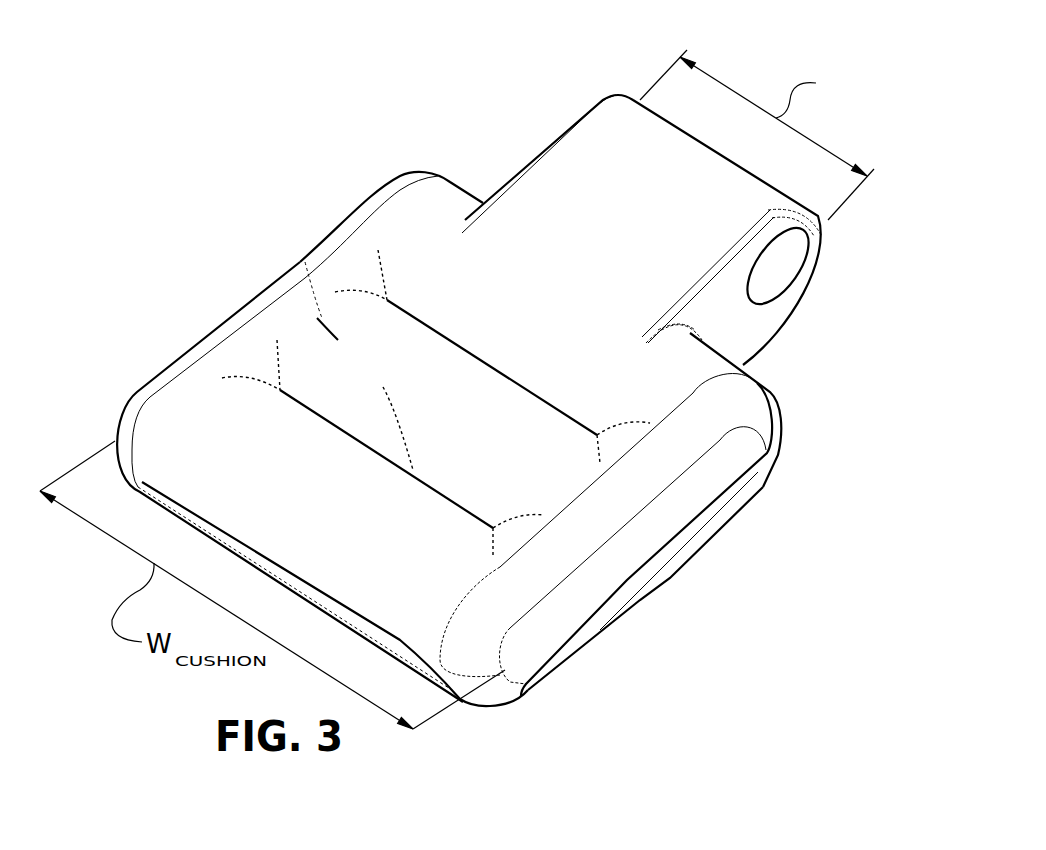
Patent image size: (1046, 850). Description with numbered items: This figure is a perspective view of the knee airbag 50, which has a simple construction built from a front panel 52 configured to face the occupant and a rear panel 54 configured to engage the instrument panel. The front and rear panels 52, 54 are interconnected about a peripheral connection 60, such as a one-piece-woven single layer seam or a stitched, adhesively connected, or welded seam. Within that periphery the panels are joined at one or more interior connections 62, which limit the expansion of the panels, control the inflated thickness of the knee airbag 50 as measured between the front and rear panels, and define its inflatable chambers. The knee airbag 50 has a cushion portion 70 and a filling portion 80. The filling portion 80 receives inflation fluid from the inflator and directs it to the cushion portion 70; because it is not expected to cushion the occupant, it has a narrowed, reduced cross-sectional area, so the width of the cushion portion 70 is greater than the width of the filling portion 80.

The knee airbag 50 is at (769, 61).
The front panel 52 is at (712, 540).
The rear panel 54 is at (305, 262).
The peripheral connection 60 is at (550, 643).
The interior connections 62 is at (497, 372).
The cushion portion 70 is at (665, 633).
The filling portion 80 is at (814, 360).